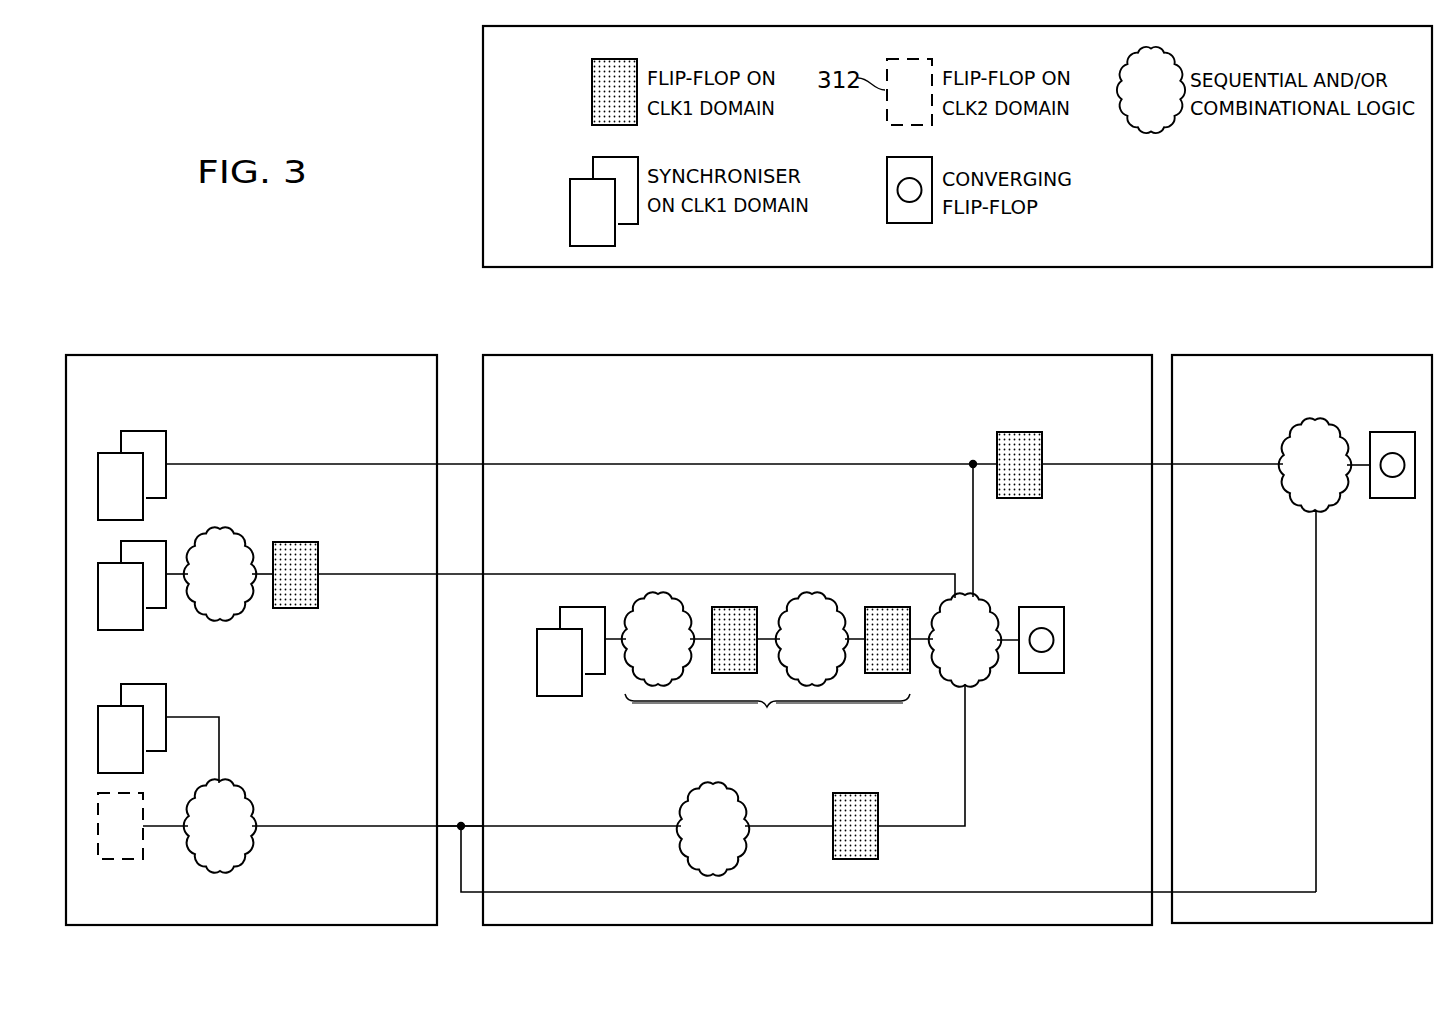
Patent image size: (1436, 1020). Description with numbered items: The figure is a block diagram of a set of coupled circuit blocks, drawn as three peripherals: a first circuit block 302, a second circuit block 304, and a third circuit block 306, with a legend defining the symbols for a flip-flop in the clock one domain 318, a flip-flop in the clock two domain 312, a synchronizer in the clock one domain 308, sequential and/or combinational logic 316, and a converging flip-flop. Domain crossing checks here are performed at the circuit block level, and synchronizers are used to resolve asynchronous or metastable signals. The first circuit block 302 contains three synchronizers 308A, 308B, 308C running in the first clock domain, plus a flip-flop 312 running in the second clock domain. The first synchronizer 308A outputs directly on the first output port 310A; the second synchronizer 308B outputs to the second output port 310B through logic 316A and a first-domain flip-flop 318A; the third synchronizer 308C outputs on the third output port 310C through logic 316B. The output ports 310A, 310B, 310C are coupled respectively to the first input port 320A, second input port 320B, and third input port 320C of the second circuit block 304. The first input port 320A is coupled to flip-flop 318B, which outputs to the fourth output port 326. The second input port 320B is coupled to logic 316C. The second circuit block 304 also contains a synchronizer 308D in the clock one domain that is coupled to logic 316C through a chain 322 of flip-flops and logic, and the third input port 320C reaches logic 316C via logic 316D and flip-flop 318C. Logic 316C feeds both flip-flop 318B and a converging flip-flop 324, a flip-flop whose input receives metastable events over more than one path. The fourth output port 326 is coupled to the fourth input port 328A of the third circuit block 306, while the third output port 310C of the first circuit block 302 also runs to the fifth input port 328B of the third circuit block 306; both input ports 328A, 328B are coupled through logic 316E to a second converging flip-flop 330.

The circuit block 1 302 is at (184, 352).
The circuit block 2 304 is at (913, 352).
The circuit block 3 306 is at (1328, 352).
The synchronizer 308 is at (570, 210).
The synchronizer 1 308A is at (130, 428).
The synchronizer 2 308B is at (150, 619).
The synchronizer 3 308C is at (170, 698).
The synchronizer 308D is at (560, 698).
The output port 1 310A is at (297, 462).
The output port 2 310B is at (375, 580).
The output port 3 310C is at (375, 830).
The flip-flop 312 is at (113, 862).
The sequential and/or combinational logic 316 is at (1151, 133).
The sequential and/or combinational logic 316A is at (218, 527).
The sequential and/or combinational logic 316B is at (240, 866).
The logic 316C is at (985, 684).
The logic 316D is at (713, 784).
The logic 316E is at (1300, 502).
The flip-flop running in the first clock domain 318 is at (590, 90).
The flip-flop 318A is at (297, 542).
The flip-flop 318B is at (1020, 430).
The flip-flop 318C is at (855, 793).
The input port 1 320A is at (713, 462).
The input port 2 320B is at (713, 572).
The input port 3 320C is at (592, 830).
The chain of flip-flops and logic 322 is at (766, 667).
The converging flip-flop 324 is at (1043, 606).
The output port 4 326 is at (1093, 466).
The input port 4 328A is at (1228, 466).
The input port 5 328B is at (1316, 695).
The converging flip-flop 330 is at (1392, 500).